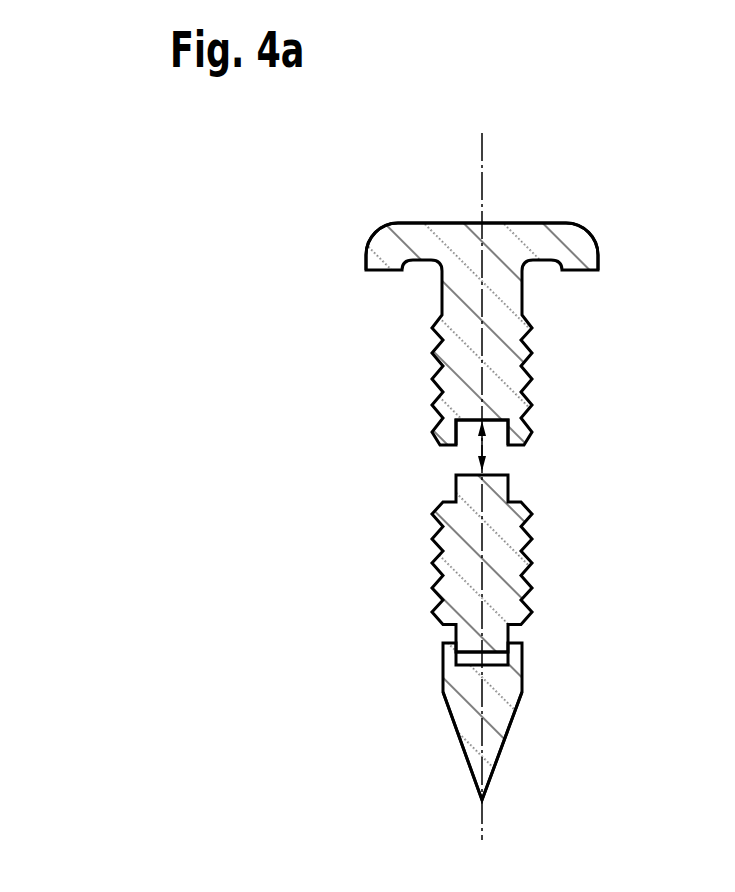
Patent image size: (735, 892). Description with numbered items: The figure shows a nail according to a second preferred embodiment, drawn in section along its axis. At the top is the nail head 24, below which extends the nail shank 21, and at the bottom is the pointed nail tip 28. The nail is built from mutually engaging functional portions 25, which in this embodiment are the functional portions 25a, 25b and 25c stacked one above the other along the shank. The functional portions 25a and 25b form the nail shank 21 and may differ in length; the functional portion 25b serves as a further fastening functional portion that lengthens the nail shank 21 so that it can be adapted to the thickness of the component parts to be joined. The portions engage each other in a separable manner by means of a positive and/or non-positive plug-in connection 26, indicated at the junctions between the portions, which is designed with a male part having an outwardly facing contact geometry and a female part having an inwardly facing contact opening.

The nail shank 21 is at (405, 444).
The nail head 24 is at (582, 245).
The functional portions 25 is at (524, 511).
The functional portion 25a is at (531, 334).
The functional portion 25b is at (523, 530).
The functional portion 25c is at (499, 721).
The plug-in connection 26 is at (527, 465).
The nail tip 28 is at (472, 732).